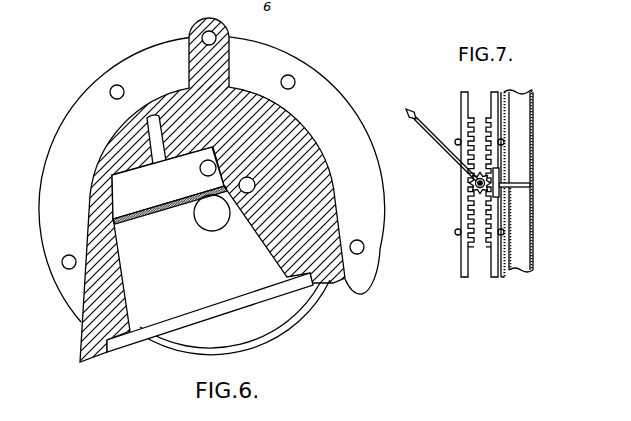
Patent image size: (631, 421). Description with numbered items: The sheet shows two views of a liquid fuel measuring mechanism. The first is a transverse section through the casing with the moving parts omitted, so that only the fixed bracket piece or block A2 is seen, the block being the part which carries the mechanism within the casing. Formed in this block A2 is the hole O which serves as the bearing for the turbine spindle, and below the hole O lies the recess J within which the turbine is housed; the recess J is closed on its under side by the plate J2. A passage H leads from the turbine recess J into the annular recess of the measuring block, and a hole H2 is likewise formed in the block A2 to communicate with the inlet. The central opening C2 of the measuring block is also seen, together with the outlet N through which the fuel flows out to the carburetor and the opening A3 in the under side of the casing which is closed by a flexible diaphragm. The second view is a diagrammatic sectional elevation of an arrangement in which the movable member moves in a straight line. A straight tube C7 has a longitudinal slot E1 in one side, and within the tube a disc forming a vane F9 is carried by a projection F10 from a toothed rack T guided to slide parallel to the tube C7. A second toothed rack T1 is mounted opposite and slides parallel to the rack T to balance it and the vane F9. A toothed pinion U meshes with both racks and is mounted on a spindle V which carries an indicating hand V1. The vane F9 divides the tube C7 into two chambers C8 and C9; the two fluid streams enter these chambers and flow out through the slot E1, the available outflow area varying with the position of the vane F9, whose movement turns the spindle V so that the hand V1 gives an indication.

In FIG. 6, the outlet N is at (203, 28).
In FIG. 6, the passage H is at (210, 161).
In FIG. 6, the hole O is at (147, 126).
In FIG. 6, the recess J is at (137, 182).
In FIG. 6, the plate J2 is at (140, 216).
In FIG. 6, the central opening C2 is at (208, 218).
In FIG. 6, the hole H2 is at (247, 193).
In FIG. 6, the bracket piece or block A2 is at (325, 208).
In FIG. 6, the opening A3 is at (298, 285).
In FIG. 7, the indicating hand V1 is at (433, 132).
In FIG. 7, the spindle V is at (475, 184).
In FIG. 7, the toothed pinion U is at (472, 196).
In FIG. 7, the chamber C8 is at (517, 107).
In FIG. 7, the slot E1 is at (508, 130).
In FIG. 7, the straight tube C7 is at (534, 150).
In FIG. 7, the disc or vane F9 is at (515, 187).
In FIG. 7, the projection F10 is at (507, 190).
In FIG. 7, the chamber C9 is at (523, 253).
In FIG. 7, the second toothed rack T1 is at (468, 280).
In FIG. 7, the toothed rack T is at (500, 282).